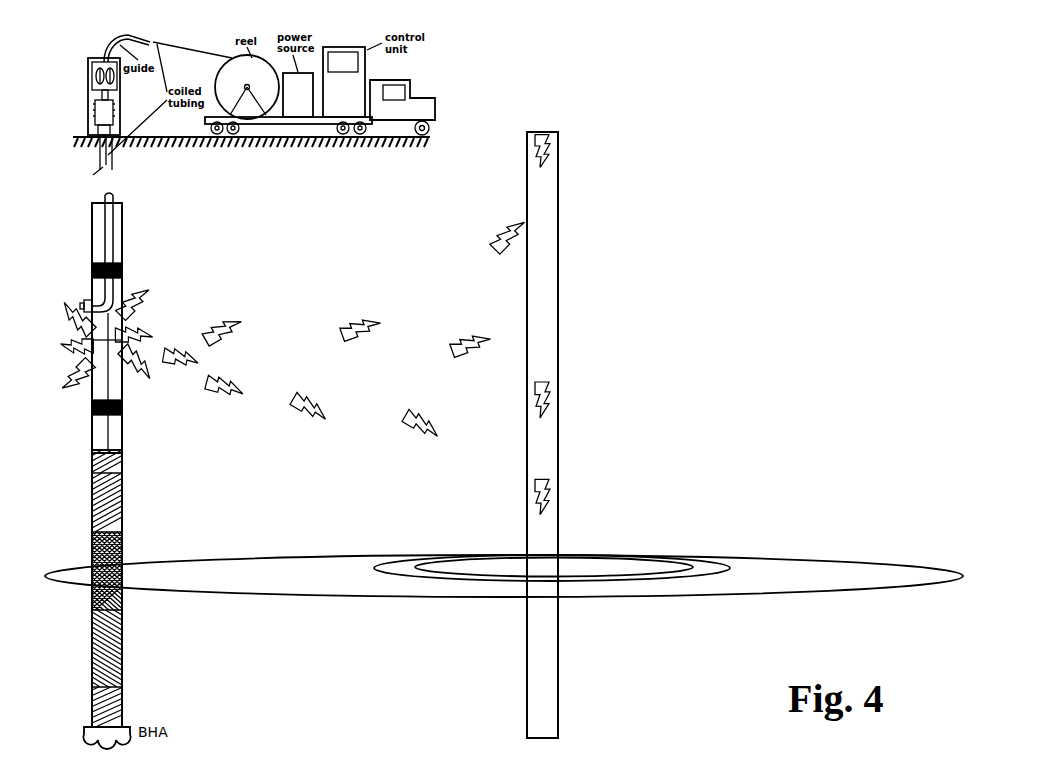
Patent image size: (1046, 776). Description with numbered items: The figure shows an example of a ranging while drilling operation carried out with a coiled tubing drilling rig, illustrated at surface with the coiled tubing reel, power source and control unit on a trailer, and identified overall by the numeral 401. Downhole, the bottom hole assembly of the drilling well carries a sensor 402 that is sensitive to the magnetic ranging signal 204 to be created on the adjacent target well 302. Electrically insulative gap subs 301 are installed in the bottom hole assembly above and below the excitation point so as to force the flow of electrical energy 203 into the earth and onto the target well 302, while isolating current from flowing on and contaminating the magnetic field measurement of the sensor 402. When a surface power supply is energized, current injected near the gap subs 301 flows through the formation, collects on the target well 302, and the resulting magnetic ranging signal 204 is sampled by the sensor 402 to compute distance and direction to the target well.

The electrical energy 203 is at (292, 327).
The magnetic ranging signal 204 is at (666, 536).
The gap sub 301 is at (129, 271).
The target well 302 is at (561, 215).
The ranging system 401 is at (509, 65).
The sensor 402 is at (131, 547).